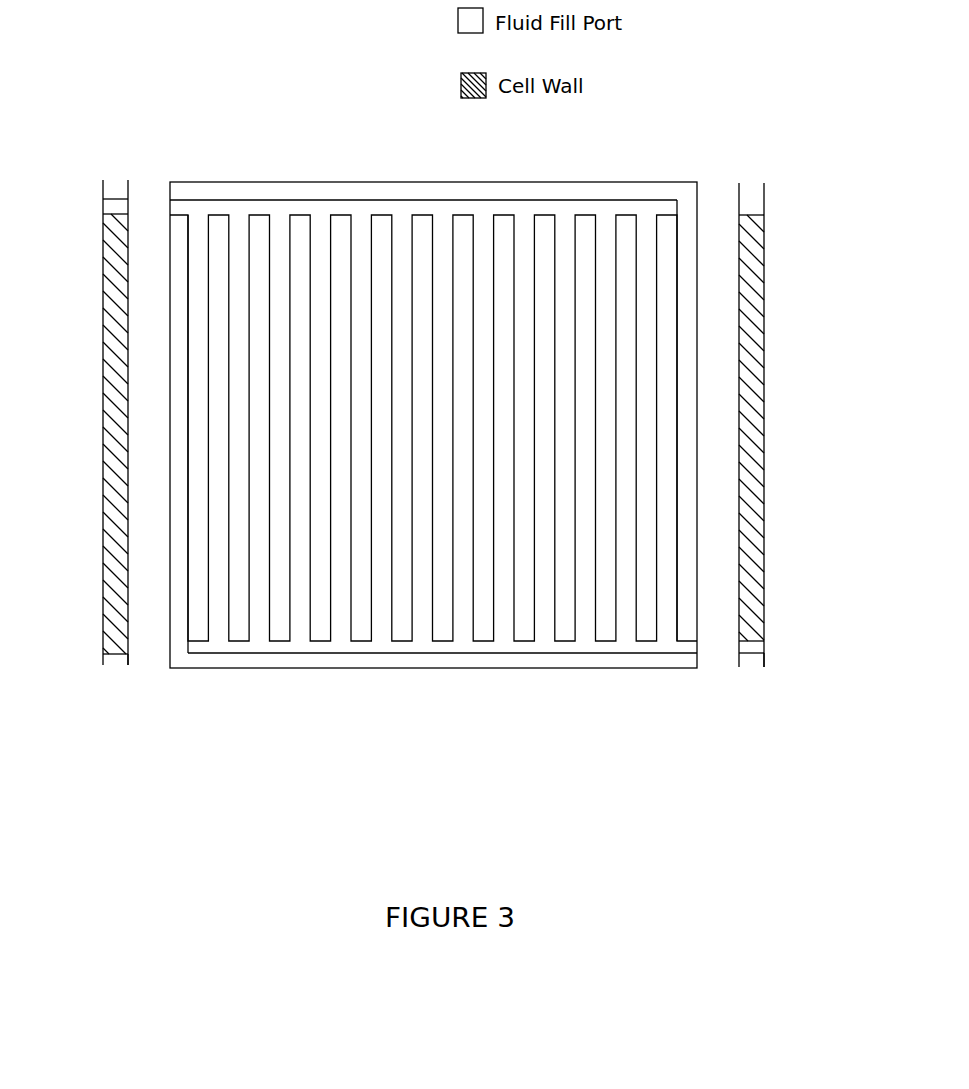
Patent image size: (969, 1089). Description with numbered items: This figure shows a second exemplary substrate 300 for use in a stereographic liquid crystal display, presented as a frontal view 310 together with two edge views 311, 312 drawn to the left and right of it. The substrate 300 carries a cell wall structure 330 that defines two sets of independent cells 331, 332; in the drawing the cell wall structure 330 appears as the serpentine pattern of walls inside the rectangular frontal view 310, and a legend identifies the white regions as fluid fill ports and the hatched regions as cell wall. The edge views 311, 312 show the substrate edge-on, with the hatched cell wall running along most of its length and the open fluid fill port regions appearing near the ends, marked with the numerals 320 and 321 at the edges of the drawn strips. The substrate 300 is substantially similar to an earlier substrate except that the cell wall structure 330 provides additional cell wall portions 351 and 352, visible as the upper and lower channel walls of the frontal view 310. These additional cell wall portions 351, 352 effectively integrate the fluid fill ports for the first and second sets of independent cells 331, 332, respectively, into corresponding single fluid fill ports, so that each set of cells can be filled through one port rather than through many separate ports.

The second exemplary substrate 300 is at (350, 182).
The frontal view 310 is at (706, 179).
The edge view 311 is at (128, 165).
The edge view 312 is at (776, 175).
The outer edge of cell wall 320 is at (253, 193).
The inner edge of cell wall 321 is at (128, 665).
The cell wall structure 330 is at (188, 631).
The first set of independent cells 331 is at (180, 202).
The second set of independent cells 332 is at (683, 655).
The additional cell wall portion 351 is at (438, 200).
The additional cell wall portion 352 is at (542, 653).